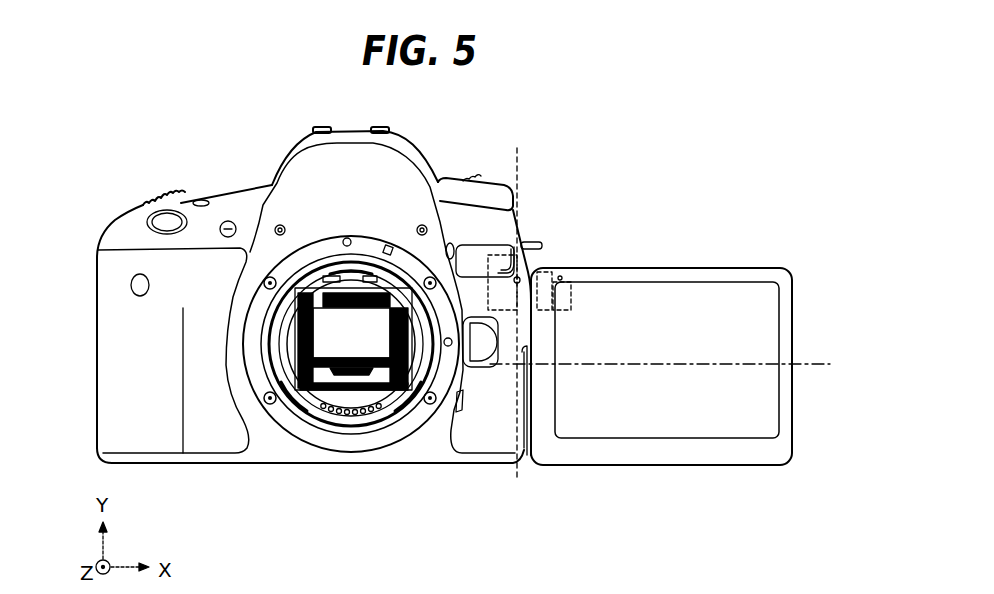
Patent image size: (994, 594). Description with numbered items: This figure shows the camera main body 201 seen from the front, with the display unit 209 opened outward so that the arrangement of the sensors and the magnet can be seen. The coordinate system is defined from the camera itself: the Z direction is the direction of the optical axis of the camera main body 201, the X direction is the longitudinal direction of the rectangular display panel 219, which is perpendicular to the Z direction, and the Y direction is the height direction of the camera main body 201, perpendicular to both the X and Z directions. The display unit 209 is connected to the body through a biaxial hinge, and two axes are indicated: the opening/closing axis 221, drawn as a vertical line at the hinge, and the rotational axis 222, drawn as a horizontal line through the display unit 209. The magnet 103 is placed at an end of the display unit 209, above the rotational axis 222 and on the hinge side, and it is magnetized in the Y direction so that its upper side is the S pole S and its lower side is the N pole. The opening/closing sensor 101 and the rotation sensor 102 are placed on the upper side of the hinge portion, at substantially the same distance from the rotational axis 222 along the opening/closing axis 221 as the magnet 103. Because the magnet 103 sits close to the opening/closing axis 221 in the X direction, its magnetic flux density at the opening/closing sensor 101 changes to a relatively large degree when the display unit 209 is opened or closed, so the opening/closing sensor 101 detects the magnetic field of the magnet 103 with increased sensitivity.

The camera main body 201 is at (204, 150).
The display unit 209 is at (668, 466).
The display panel 219 is at (664, 290).
The opening/closing axis 221 is at (526, 162).
The rotational axis 222 is at (810, 362).
The opening/closing sensor 101 is at (505, 254).
The rotation sensor 102 is at (541, 266).
The magnet 103 is at (566, 280).
The S pole S is at (566, 274).